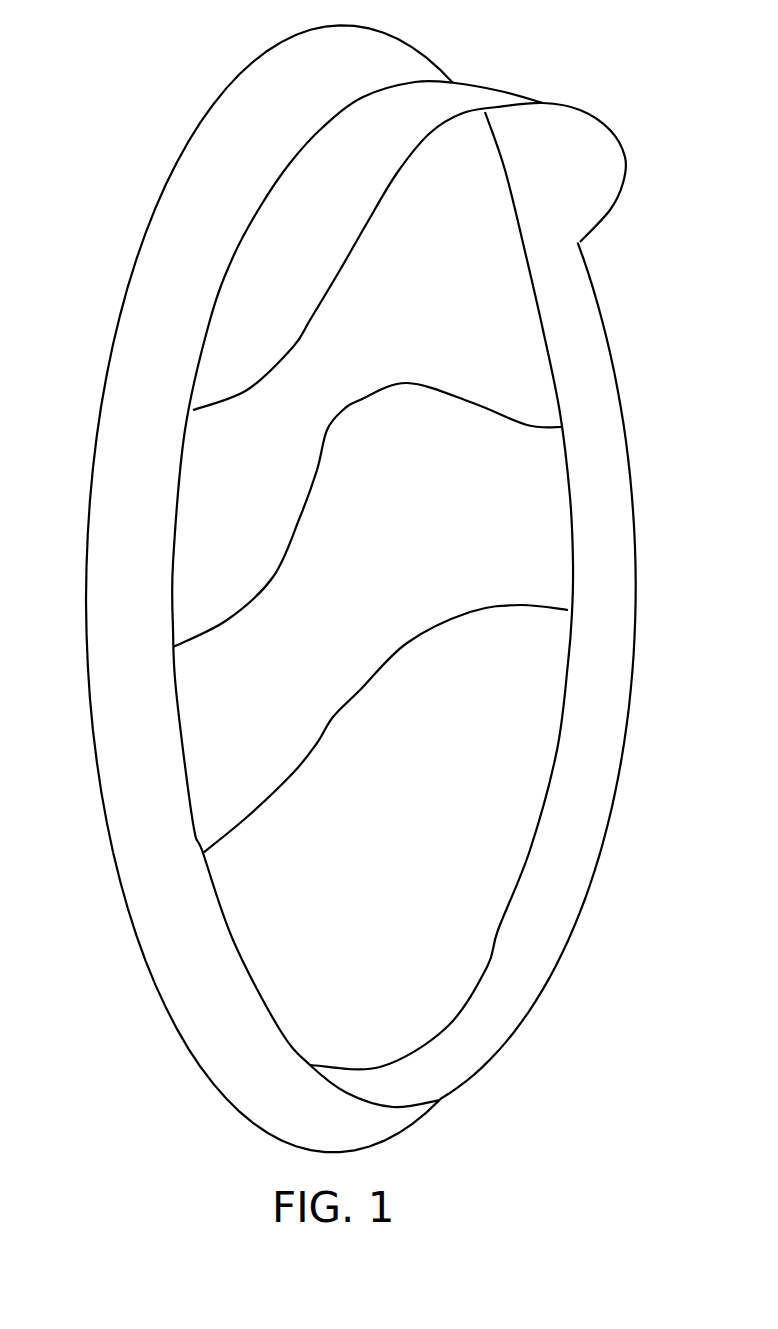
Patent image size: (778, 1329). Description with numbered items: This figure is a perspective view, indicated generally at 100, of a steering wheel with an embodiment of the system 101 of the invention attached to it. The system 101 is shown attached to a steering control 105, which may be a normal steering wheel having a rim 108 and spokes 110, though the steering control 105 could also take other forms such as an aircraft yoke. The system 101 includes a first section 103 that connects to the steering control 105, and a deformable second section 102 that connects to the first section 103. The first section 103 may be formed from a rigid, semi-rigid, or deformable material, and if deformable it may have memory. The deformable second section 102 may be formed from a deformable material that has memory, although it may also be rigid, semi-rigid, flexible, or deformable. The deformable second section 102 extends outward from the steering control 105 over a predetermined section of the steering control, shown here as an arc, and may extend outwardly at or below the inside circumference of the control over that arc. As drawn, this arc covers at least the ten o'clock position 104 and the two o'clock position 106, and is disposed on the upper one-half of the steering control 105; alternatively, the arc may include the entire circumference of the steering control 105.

The steering wheel with system 100 is at (176, 72).
The system 101 is at (330, 244).
The deformable second section 102 is at (347, 258).
The first section 103 is at (203, 342).
The ten o'clock position 104 is at (113, 183).
The steering control 105 is at (166, 1012).
The two o'clock position 106 is at (587, 78).
The rim 108 is at (627, 720).
The spokes 110 is at (495, 592).